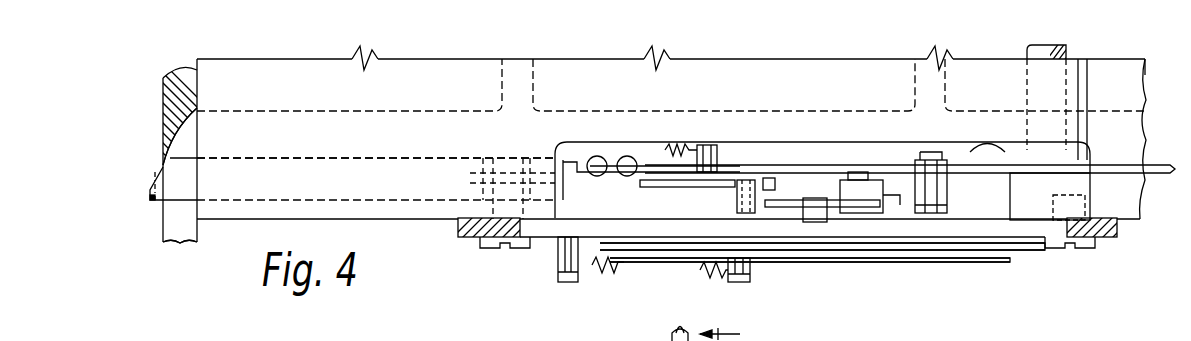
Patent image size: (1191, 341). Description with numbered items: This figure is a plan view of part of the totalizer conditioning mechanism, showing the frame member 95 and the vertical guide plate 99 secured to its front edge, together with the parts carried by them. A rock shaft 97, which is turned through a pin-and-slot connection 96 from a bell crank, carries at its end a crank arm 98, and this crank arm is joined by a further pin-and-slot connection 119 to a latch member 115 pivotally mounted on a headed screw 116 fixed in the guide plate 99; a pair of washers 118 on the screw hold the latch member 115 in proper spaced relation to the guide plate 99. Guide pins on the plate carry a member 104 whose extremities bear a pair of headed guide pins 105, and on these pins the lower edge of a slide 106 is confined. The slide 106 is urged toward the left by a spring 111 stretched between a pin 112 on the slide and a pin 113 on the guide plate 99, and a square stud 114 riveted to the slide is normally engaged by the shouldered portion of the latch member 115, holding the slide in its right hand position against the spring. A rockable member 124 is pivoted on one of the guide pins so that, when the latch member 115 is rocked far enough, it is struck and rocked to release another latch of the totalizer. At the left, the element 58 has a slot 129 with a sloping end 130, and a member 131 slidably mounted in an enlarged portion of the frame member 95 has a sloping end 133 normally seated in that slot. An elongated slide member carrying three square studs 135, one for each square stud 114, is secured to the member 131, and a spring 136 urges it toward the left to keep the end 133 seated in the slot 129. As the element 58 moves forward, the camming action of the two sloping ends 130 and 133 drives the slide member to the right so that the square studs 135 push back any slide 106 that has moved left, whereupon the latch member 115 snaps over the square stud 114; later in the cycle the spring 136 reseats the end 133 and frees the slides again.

The element 58 is at (165, 96).
The frame member 95 is at (1126, 64).
The pin-and-slot connection 96 is at (398, 222).
The rock shaft 97 is at (1026, 50).
The crank arm 98 is at (990, 148).
The guide plate 99 is at (540, 240).
The member 104 is at (878, 251).
The headed guide pins 105 is at (915, 263).
The slide 106 is at (610, 252).
The spring 111 is at (604, 278).
The pin 112 is at (748, 283).
The pin 113 is at (568, 283).
The square stud 114 is at (815, 215).
The latch member 115 is at (855, 200).
The headed screw 116 is at (865, 172).
The washers 118 is at (896, 205).
The pin-and-slot connection 119 is at (948, 200).
The rockable member 124 is at (668, 188).
The slot 129 is at (197, 232).
The sloping end 130 is at (186, 118).
The member 131 is at (364, 156).
The sloping end 133 is at (150, 203).
The square studs 135 is at (737, 196).
The spring 136 is at (682, 140).